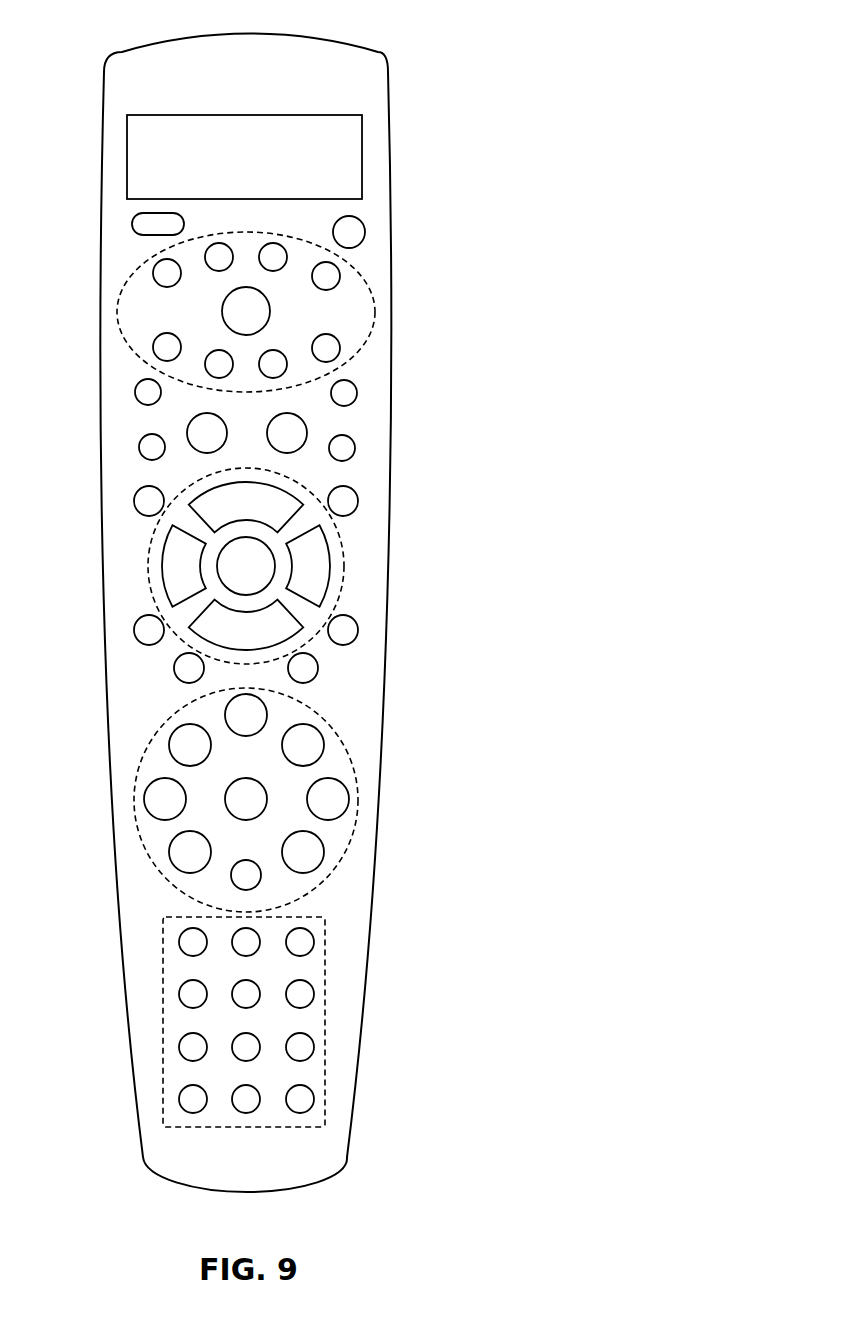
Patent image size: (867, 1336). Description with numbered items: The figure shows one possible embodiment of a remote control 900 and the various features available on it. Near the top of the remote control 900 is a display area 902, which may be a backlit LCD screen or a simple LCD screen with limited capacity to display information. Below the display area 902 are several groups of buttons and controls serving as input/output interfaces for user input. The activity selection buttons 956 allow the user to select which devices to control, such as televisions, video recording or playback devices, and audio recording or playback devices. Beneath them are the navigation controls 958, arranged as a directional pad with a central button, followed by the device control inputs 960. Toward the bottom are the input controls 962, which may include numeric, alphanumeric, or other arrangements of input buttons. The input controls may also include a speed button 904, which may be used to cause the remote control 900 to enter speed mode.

The remote control 900 is at (421, 92).
The display area 902 is at (244, 157).
The speed button 904 is at (358, 496).
The activity selection buttons 956 is at (155, 258).
The navigation controls 958 is at (148, 562).
The device control inputs 960 is at (135, 782).
The input controls 962 is at (162, 1033).